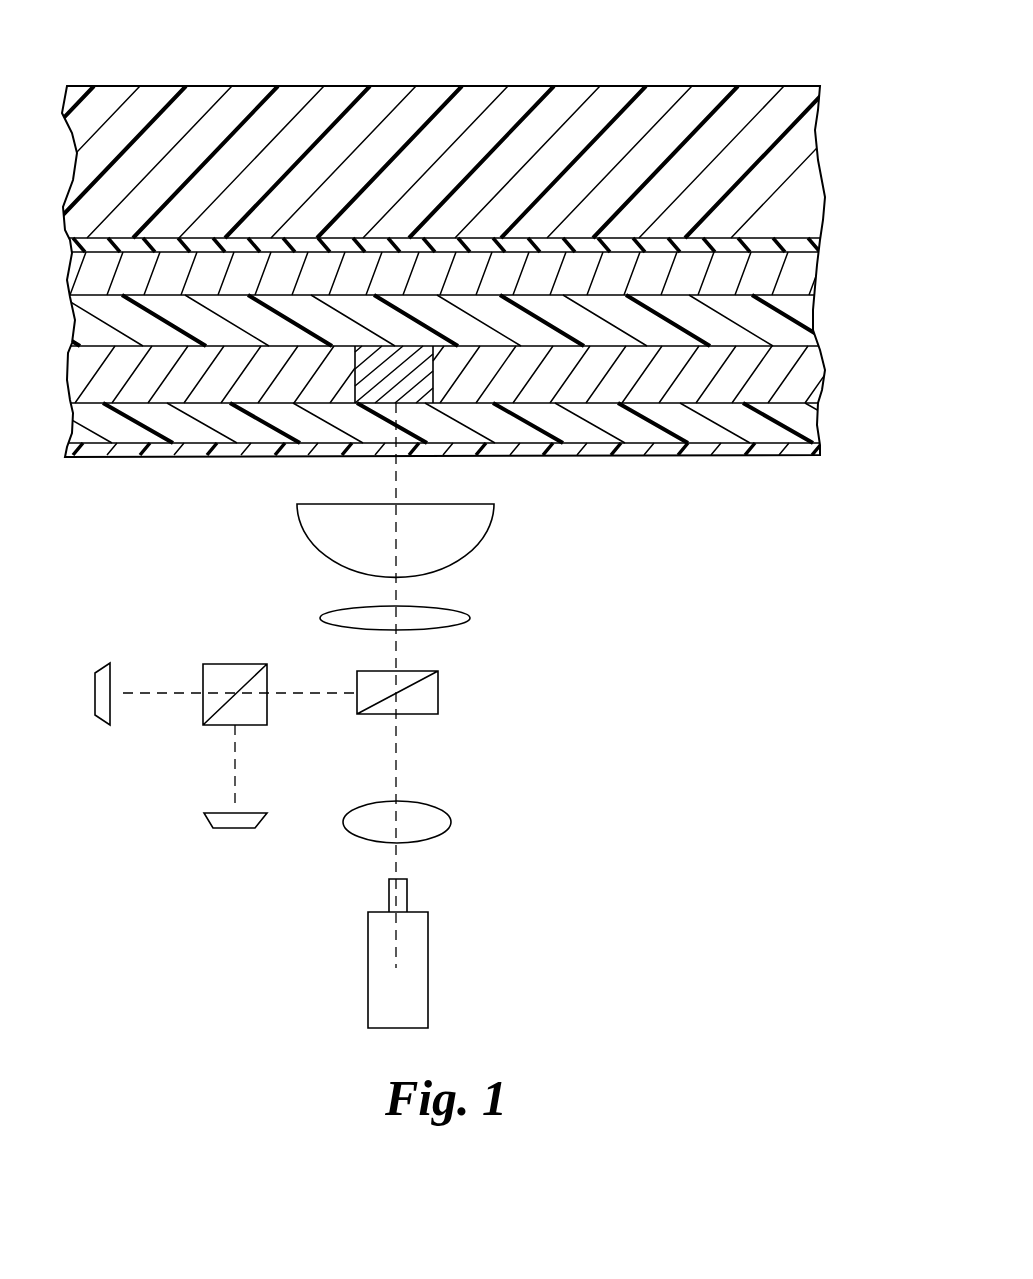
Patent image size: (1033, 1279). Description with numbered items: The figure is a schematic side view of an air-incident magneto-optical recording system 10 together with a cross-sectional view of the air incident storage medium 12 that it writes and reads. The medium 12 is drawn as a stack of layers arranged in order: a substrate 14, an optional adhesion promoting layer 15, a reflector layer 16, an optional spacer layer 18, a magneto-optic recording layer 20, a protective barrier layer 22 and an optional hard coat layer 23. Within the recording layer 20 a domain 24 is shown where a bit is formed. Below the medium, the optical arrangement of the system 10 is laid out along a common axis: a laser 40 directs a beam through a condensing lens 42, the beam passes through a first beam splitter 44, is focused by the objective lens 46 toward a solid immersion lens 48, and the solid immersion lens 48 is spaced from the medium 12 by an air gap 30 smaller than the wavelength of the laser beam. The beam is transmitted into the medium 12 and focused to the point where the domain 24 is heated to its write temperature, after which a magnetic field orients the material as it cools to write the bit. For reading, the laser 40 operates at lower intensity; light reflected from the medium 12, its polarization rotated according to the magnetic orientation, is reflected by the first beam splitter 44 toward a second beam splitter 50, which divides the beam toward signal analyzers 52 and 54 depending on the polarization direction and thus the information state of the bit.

The air-incident magneto-optical recording system 10 is at (362, 715).
The air incident storage medium 12 is at (449, 250).
The substrate 14 is at (802, 152).
The adhesion promoting layer 15 is at (813, 245).
The reflector layer 16 is at (815, 272).
The spacer layer 18 is at (803, 318).
The magneto-optic recording layer 20 is at (817, 375).
The protective barrier layer 22 is at (808, 422).
The hard coat layer 23 is at (822, 448).
The domain 24 is at (408, 388).
The air gap 30 is at (382, 533).
The laser 40 is at (417, 975).
The condensing lens 42 is at (435, 818).
The first beam splitter 44 is at (428, 690).
The objective lens 46 is at (450, 617).
The solid immersion lens 48 is at (470, 528).
The second beam splitter 50 is at (223, 672).
The signal analyzer 52 is at (103, 712).
The signal analyzer 54 is at (233, 820).